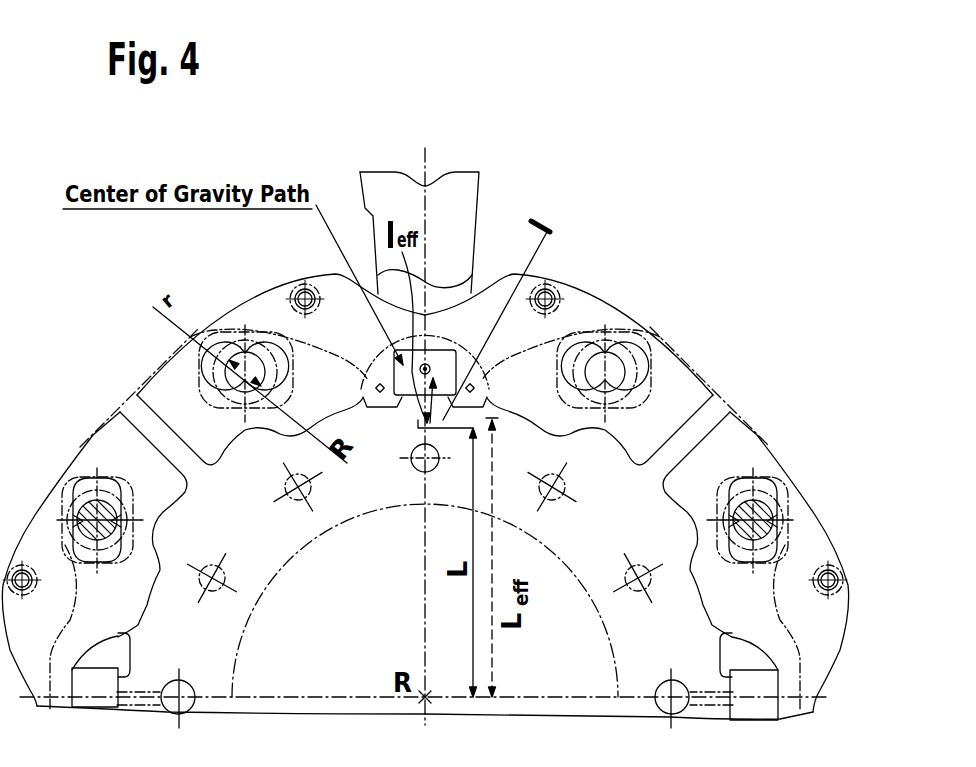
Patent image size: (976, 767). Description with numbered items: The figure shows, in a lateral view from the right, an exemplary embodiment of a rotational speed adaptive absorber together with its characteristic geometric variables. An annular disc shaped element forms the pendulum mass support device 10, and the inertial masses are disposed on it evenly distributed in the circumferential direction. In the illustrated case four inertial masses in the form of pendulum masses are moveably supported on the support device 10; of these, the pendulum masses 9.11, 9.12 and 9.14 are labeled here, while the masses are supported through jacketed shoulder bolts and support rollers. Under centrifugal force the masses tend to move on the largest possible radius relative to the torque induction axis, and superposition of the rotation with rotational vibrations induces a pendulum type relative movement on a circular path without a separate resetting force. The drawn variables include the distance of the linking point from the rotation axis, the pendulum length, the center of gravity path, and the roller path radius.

The pendulum mass 9.11 is at (672, 398).
The pendulum mass 9.12 is at (733, 448).
The pendulum mass 9.14 is at (100, 428).
The pendulum mass support device 10 is at (715, 412).